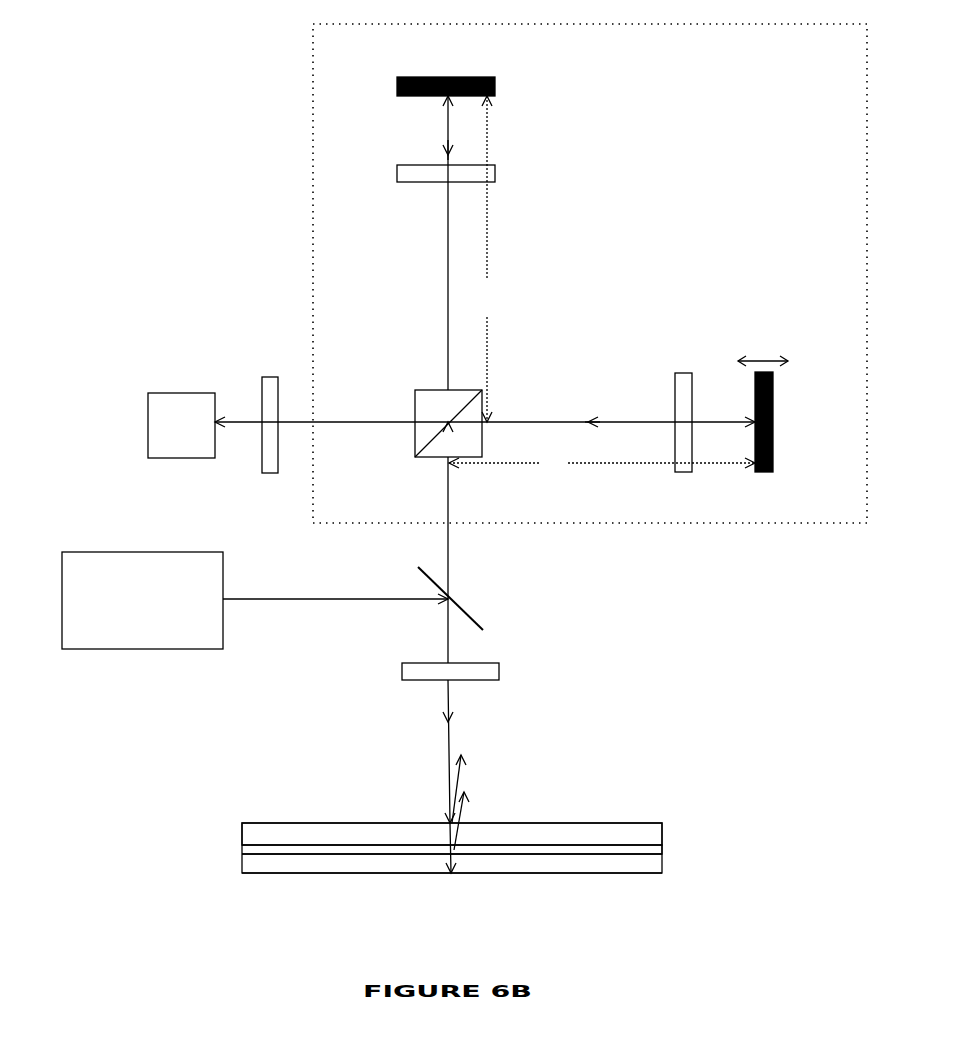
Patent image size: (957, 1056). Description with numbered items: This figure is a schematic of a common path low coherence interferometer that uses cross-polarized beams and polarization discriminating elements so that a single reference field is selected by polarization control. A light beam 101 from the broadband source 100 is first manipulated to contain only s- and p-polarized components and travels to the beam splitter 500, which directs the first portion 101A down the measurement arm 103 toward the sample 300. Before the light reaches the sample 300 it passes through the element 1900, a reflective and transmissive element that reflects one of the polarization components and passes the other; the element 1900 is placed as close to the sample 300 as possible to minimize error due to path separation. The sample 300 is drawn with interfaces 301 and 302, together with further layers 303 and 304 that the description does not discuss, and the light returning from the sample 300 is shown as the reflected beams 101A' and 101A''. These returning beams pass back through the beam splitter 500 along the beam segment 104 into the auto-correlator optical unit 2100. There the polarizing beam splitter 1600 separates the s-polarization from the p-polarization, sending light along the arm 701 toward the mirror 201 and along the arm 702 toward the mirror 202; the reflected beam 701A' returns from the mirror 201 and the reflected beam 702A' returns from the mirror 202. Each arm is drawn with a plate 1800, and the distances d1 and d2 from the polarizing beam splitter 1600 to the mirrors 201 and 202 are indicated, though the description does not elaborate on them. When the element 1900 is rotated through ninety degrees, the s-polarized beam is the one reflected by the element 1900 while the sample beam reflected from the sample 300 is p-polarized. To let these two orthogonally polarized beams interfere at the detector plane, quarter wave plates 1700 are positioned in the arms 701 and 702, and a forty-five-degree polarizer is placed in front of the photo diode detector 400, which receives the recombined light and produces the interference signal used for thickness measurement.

The broadband source 100 is at (175, 552).
The light beam 101 is at (335, 599).
The measurement arm 103 is at (448, 658).
The reflected beam 104 is at (447, 518).
The first portion of the beam 101A is at (400, 776).
The reflected beam 101A' is at (515, 772).
The reflected beam 101A'' is at (518, 804).
The mirror 201 is at (773, 395).
The mirror 202 is at (485, 76).
The sample 300 is at (285, 835).
The interface 301 is at (420, 825).
The interface 302 is at (575, 845).
The sample third layer 303 is at (330, 858).
The sample fourth layer 304 is at (430, 873).
The photo diode detector 400 is at (148, 423).
The beam splitter 500 is at (418, 567).
The arm 701 is at (537, 422).
The reflected beam 701A' is at (613, 385).
The arm 702 is at (447, 300).
The reflected beam 702A' is at (390, 111).
The polarizing beam splitter 1600 is at (430, 390).
The quarter wave plates 1700 is at (270, 473).
The optical plate 1800 is at (495, 165).
The reflective and transmissive element 1900 is at (499, 663).
The auto-correlator optical unit 2100 is at (313, 172).
The first arm distance d1 is at (602, 463).
The second arm distance d2 is at (489, 259).